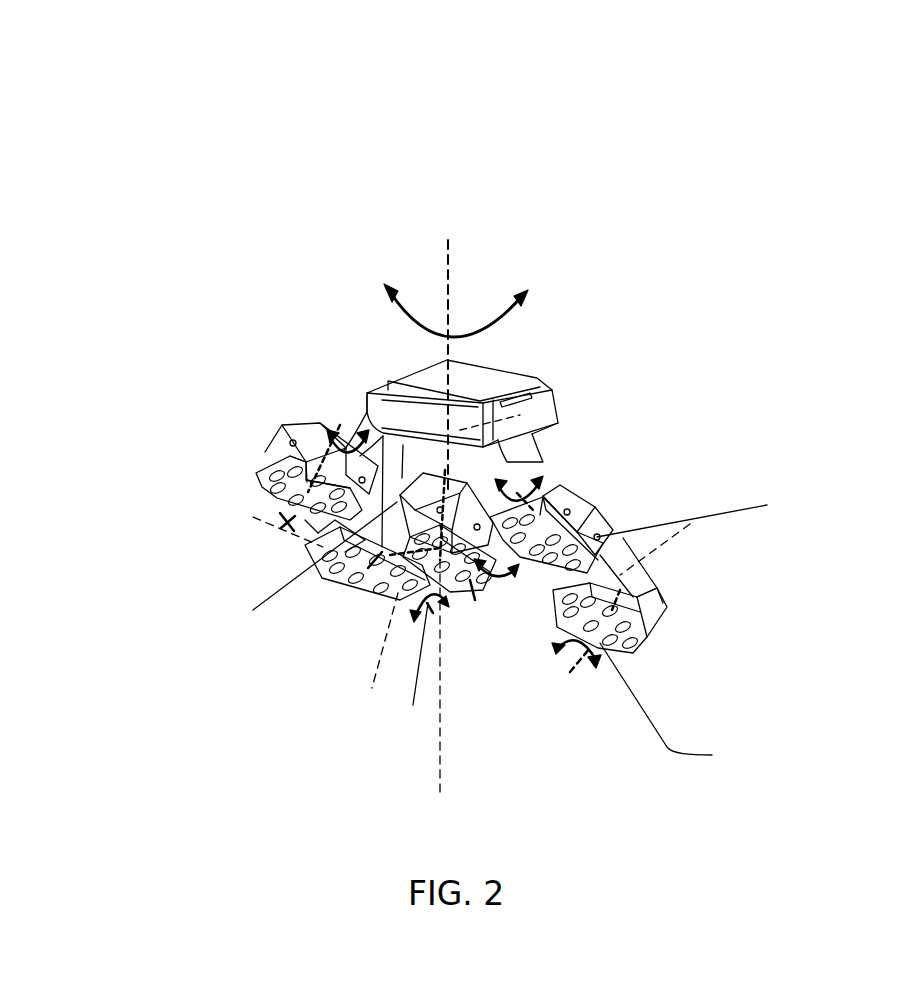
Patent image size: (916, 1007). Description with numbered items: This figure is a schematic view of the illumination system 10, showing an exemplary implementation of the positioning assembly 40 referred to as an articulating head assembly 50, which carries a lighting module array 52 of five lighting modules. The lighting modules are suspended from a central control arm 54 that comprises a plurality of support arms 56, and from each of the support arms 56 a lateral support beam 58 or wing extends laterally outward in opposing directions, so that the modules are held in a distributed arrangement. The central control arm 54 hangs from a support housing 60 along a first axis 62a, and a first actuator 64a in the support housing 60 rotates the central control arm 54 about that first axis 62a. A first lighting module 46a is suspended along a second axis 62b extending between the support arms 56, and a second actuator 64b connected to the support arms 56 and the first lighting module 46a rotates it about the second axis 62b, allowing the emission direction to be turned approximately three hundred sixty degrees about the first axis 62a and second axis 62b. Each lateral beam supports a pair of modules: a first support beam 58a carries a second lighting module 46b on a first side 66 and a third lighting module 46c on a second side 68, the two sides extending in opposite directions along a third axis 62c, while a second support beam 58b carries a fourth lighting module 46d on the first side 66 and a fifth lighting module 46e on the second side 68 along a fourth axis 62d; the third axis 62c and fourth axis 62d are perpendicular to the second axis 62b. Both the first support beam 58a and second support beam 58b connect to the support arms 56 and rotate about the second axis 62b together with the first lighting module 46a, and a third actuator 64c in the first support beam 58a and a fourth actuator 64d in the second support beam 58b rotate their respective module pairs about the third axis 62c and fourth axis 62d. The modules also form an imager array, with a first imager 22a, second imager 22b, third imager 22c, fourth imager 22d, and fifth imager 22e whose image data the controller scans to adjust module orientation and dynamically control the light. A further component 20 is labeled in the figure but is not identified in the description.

The illumination system 10 is at (776, 134).
The nozzle assembly 20 is at (273, 493).
The first imager 22a is at (498, 617).
The second imager 22b is at (599, 510).
The third imager 22c is at (655, 632).
The fourth imager 22d is at (260, 459).
The fifth imager 22e is at (330, 598).
The positioning assembly 40 is at (379, 362).
The first lighting module 46a is at (487, 575).
The second lighting module 46b is at (597, 522).
The third lighting module 46c is at (663, 628).
The fourth lighting module 46d is at (268, 481).
The fifth lighting module 46e is at (377, 603).
The articulating head assembly 50 is at (722, 336).
The lighting module array 52 is at (650, 360).
The central control arm 54 is at (372, 420).
The support arms 56 is at (565, 694).
The lateral support beam 58 is at (556, 455).
The first support beam 58a is at (637, 575).
The second support beam 58b is at (315, 530).
The support housing 60 is at (466, 372).
The first axis 62a is at (455, 255).
The second axis 62b is at (440, 795).
The third axis 62c is at (679, 629).
The fourth axis 62d is at (352, 437).
The first actuator 64a is at (560, 380).
The second actuator 64b is at (370, 688).
The third actuator 64c is at (680, 531).
The fourth actuator 64d is at (253, 517).
The first side 66 is at (603, 502).
The second side 68 is at (614, 688).